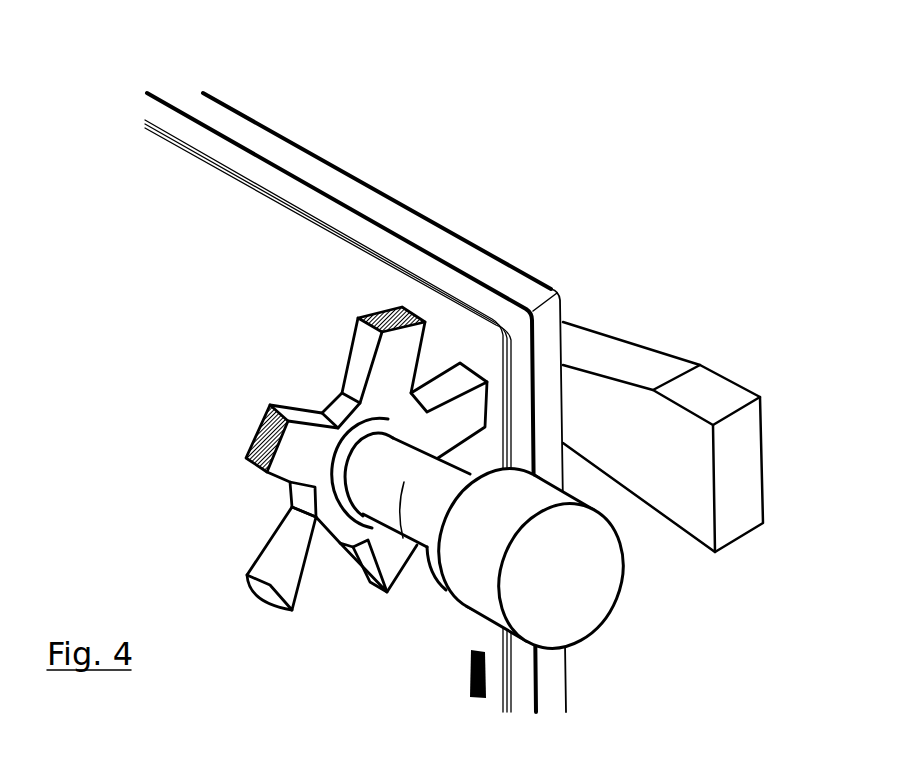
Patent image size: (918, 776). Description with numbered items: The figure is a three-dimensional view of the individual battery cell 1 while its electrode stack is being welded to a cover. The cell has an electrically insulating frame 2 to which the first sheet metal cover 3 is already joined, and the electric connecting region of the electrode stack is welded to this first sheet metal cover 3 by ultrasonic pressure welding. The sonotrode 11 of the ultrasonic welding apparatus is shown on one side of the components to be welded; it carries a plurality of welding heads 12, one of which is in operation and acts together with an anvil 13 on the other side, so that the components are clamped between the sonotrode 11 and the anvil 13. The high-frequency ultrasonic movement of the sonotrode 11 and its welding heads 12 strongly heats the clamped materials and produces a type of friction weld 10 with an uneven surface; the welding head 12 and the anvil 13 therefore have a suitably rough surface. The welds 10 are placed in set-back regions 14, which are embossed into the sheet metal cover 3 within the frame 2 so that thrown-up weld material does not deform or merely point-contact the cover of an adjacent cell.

The individual battery cell 1 is at (182, 293).
The frame 2 is at (318, 174).
The first sheet metal cover 3 is at (263, 182).
The weld 10 is at (487, 685).
The sonotrode 11 is at (578, 568).
The welding heads 12 is at (455, 415).
The anvil 13 is at (640, 368).
The set-back regions 14 is at (293, 290).